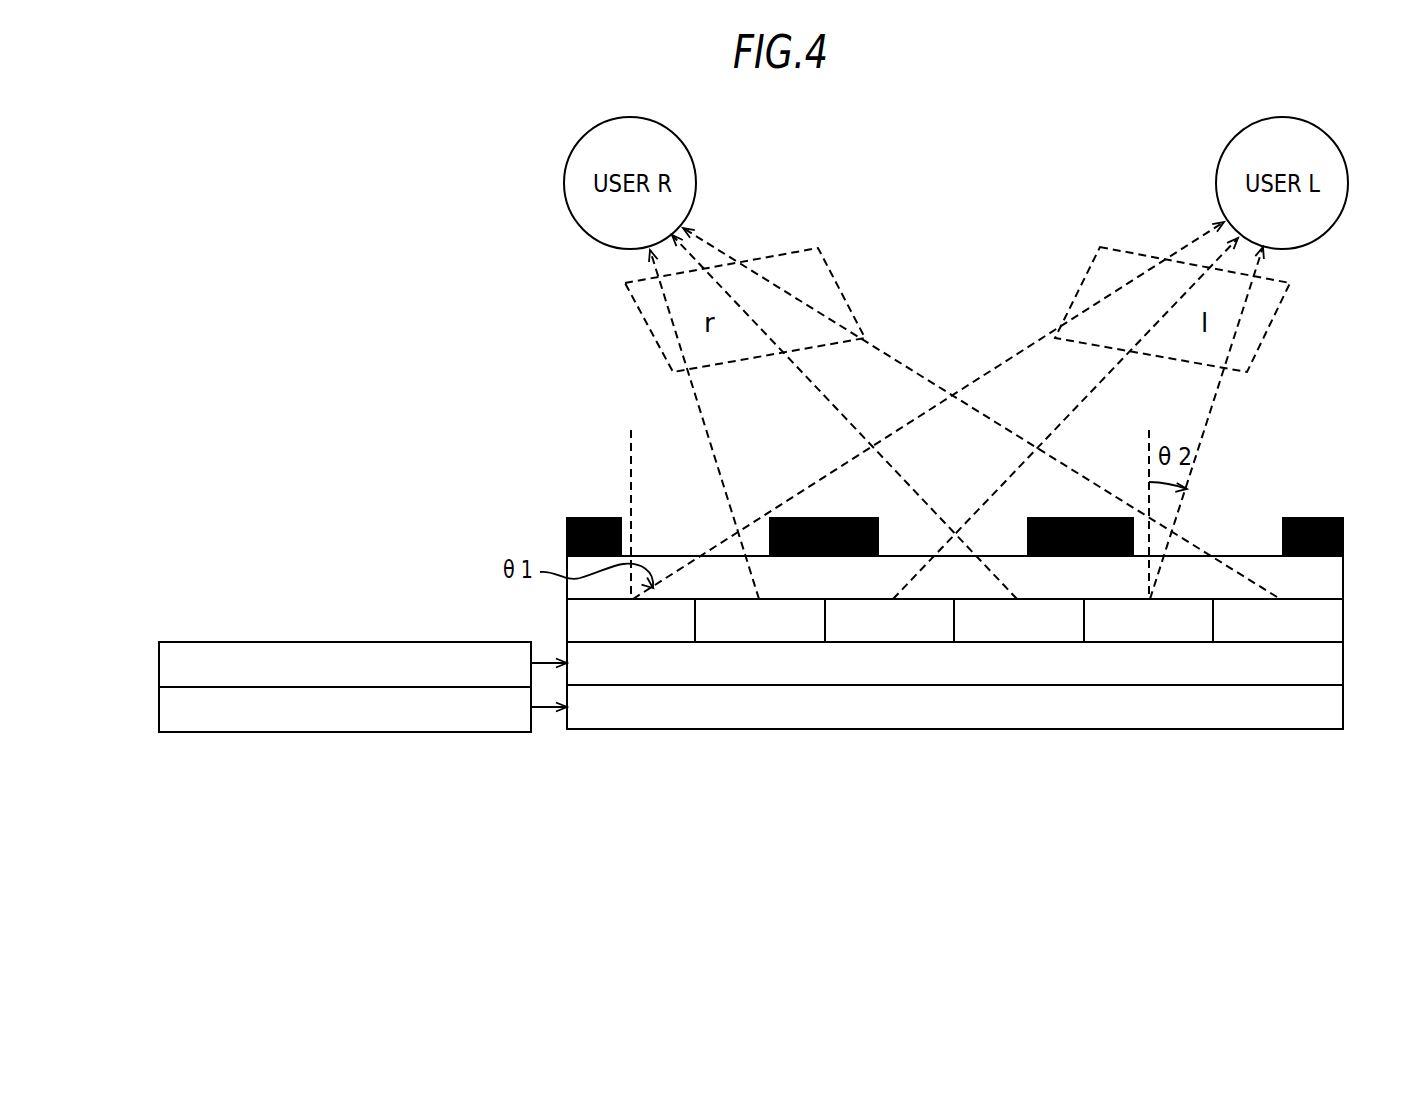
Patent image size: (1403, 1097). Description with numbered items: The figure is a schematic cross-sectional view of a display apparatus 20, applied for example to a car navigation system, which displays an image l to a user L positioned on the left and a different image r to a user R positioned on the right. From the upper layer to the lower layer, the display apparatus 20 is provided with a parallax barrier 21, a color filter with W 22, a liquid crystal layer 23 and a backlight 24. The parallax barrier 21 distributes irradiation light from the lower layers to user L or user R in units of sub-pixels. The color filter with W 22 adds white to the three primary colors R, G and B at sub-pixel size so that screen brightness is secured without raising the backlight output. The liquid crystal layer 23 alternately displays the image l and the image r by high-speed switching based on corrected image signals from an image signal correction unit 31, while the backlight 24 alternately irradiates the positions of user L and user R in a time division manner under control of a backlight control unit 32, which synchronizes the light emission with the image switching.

The display apparatus 20 is at (981, 699).
The parallax barrier 21 is at (1328, 541).
The color filter with W 22 is at (1343, 621).
The liquid crystal layer 23 is at (1327, 666).
The backlight 24 is at (1327, 710).
The image signal correction unit 31 is at (378, 641).
The backlight control unit 32 is at (377, 733).